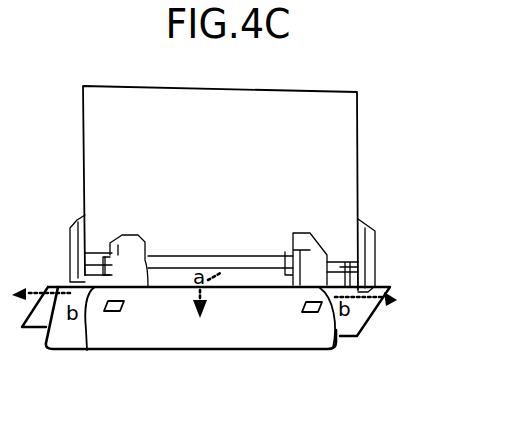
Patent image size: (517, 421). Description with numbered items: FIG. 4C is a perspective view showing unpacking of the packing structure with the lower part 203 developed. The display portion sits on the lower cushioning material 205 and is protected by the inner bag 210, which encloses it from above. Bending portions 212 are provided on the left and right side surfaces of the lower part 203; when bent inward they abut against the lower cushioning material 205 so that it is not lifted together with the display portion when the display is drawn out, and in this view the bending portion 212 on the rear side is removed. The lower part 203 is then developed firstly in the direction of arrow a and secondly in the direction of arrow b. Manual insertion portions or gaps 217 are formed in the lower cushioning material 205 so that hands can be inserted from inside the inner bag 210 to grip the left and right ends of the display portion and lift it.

The inner bag 210 is at (274, 142).
The bending portion 212 is at (372, 228).
The lower part 203 is at (368, 260).
The lower cushioning material 205 is at (125, 263).
The manual insertion portion 217 is at (87, 350).